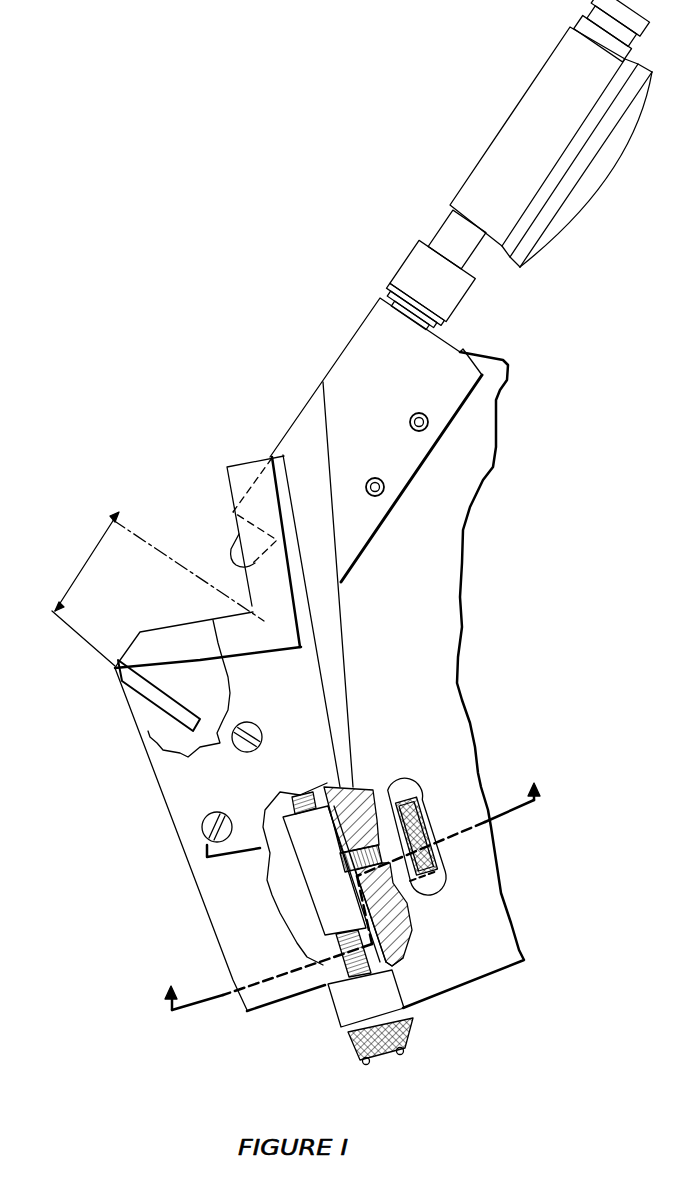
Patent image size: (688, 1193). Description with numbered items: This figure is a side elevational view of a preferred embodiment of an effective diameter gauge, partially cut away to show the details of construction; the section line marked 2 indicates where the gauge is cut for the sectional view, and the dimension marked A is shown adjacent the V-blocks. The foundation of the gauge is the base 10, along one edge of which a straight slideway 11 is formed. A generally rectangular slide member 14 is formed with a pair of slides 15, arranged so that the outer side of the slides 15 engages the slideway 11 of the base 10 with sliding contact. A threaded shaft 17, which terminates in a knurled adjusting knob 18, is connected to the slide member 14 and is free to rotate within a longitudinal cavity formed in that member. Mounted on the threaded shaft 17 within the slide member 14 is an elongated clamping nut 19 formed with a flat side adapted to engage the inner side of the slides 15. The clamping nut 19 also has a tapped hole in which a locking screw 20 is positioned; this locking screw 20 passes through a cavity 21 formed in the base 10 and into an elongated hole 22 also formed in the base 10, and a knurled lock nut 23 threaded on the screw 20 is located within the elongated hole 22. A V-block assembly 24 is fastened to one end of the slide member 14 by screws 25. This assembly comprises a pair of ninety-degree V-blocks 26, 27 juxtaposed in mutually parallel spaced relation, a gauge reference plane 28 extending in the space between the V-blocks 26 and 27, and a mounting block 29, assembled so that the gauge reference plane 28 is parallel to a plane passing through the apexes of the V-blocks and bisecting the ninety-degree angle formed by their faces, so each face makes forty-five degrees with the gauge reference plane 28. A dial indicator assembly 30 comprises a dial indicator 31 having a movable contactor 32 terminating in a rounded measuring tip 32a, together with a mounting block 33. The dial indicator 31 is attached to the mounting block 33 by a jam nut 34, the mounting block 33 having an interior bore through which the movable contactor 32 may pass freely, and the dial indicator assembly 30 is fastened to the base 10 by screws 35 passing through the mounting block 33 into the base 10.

The base 10 is at (483, 970).
The straight slideway 11 is at (397, 986).
The slide member 14 is at (275, 997).
The slides 15 is at (398, 976).
The threaded shaft 17 is at (345, 970).
The knurled adjusting knob 18 is at (350, 1047).
The elongated clamping nut 19 is at (320, 903).
The locking screw 20 is at (305, 858).
The cavity 21 is at (340, 856).
The elongated hole 22 is at (442, 878).
The knurled lock nut 23 is at (423, 803).
The V-block assembly 24 is at (148, 715).
The screws 25 is at (243, 747).
The V-block 26 is at (150, 630).
The V-block 27 is at (241, 469).
The gauge reference plane 28 is at (117, 673).
The mounting block 29 is at (170, 763).
The dial indicator assembly 30 is at (365, 312).
The dial indicator 31 is at (500, 145).
The movable contactor 32 is at (238, 537).
The rounded measuring tip 32a is at (231, 553).
The mounting block 33 is at (348, 357).
The jam nut 34 is at (415, 270).
The screws 35 is at (385, 487).
The dimension A is at (85, 589).
The section line 2- 2 is at (354, 898).